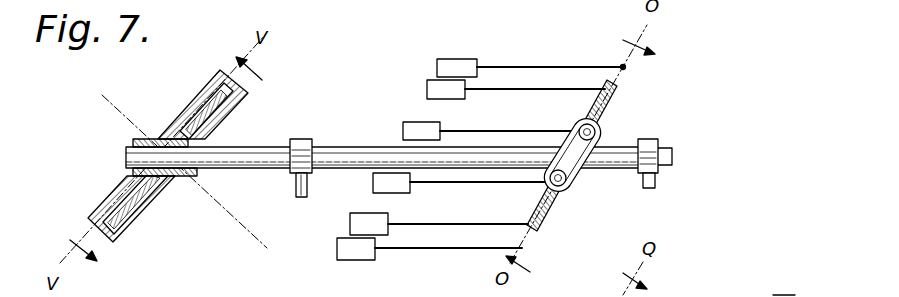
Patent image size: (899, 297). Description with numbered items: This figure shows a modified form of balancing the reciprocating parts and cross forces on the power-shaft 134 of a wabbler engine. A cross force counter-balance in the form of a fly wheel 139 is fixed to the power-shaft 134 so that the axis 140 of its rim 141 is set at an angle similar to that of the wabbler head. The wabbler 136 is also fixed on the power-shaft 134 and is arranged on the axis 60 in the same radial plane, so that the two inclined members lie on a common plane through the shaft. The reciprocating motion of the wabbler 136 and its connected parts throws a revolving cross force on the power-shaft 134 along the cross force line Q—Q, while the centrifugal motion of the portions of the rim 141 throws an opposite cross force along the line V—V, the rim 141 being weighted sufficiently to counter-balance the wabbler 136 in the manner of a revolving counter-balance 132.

The power-shaft 134 is at (268, 168).
The wabbler 136 is at (612, 103).
The fly wheel 139 is at (153, 188).
The axis 140 is at (135, 90).
The rim 141 is at (123, 227).
The axis 60 is at (673, 32).
The counter-balance 132 is at (744, 288).